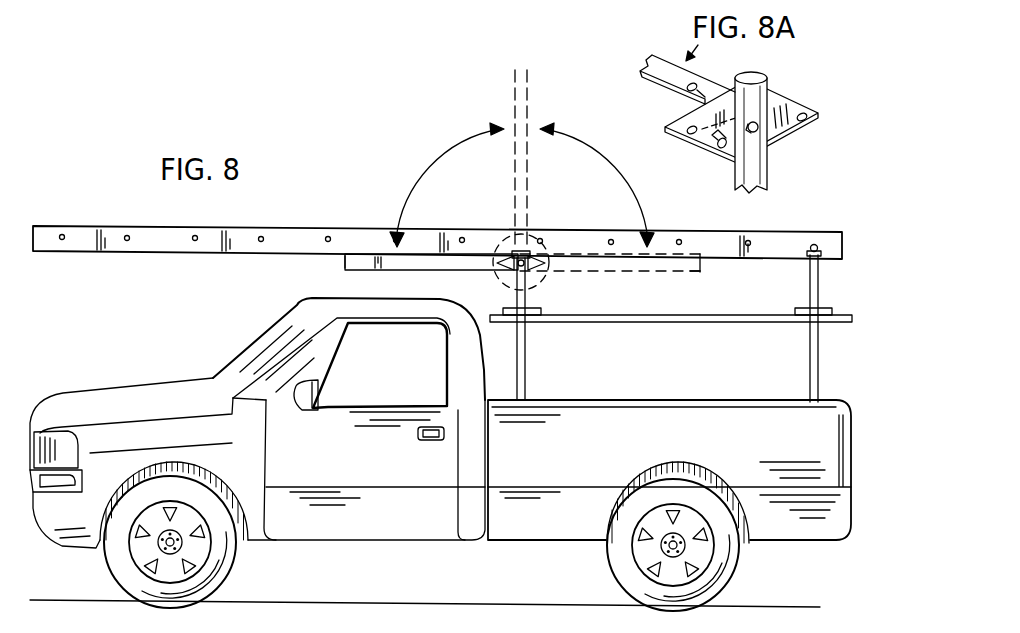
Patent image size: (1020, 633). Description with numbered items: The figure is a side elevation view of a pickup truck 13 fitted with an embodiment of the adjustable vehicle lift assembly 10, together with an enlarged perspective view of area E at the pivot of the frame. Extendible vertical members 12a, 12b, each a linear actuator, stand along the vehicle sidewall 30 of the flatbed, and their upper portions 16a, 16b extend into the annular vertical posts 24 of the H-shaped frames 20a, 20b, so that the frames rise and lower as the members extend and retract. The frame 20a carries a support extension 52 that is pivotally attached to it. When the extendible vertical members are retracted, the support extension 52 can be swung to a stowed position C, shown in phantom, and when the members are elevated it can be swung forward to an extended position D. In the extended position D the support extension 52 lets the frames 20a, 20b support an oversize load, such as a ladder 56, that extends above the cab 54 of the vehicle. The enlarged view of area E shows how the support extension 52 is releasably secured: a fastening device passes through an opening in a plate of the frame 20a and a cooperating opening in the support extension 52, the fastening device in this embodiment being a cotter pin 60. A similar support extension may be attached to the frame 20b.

In FIG. 8, the adjustable vehicle lift assembly 10 is at (803, 222).
In FIG. 8, the extendible vertical member 12a is at (531, 373).
In FIG. 8, the extendible vertical member 12b is at (824, 380).
In FIG. 8, the pickup truck 13 is at (130, 337).
In FIG. 8, the upper portion 16a is at (527, 340).
In FIG. 8, the upper portion 16b is at (810, 362).
In FIG. 8, the H-shaped frame 20a is at (510, 293).
In FIG. 8A, the H-shaped frame 20a is at (767, 181).
In FIG. 8, the H-shaped frame 20b is at (845, 270).
In FIG. 8, the annular vertical post 24 is at (527, 294).
In FIG. 8, the vehicle sidewall 30 is at (579, 474).
In FIG. 8, the support extension 52 is at (423, 270).
In FIG. 8A, the support extension 52 is at (653, 110).
In FIG. 8, the cab 54 is at (244, 326).
In FIG. 8, the ladder 56 is at (286, 236).
In FIG. 8A, the cotter pin 60 is at (718, 152).
In FIG. 8, the stowed position C is at (680, 288).
In FIG. 8, the extended position D is at (345, 260).
In FIG. 8, the area E is at (508, 243).